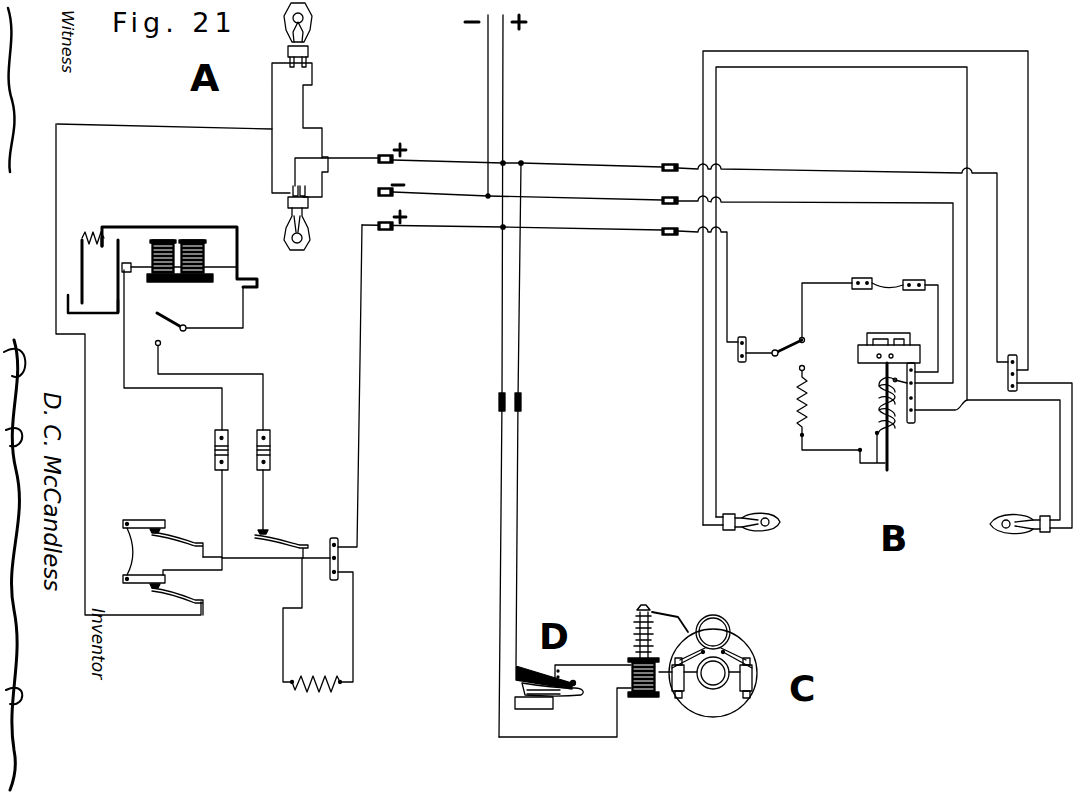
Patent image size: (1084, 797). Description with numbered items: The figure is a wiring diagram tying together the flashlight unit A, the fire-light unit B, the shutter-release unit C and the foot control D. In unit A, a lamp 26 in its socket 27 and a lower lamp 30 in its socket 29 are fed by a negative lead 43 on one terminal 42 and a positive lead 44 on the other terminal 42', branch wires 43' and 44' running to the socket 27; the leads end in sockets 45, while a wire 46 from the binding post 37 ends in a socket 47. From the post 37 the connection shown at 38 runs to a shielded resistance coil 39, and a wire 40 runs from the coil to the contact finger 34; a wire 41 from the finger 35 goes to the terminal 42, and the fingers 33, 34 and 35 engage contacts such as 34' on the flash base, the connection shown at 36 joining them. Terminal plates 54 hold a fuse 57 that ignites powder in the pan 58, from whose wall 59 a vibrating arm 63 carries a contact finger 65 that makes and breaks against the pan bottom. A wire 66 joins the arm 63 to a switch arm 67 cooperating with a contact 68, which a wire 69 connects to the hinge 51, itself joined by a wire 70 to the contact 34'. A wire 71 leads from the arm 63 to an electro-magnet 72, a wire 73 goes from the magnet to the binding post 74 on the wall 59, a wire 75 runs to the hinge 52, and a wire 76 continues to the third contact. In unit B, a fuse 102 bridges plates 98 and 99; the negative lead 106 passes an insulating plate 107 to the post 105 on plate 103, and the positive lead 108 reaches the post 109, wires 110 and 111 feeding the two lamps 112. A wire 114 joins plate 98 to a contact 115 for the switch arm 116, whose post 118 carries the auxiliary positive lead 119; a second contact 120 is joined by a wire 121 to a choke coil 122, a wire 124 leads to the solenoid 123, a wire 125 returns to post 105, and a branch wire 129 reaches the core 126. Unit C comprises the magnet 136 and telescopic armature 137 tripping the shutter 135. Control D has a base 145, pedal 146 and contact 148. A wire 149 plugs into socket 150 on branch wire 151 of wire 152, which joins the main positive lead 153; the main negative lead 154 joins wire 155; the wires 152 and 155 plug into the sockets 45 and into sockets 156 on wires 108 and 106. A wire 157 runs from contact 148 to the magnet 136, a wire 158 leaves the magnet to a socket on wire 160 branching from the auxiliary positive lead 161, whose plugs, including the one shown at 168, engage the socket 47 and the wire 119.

The lamp 26 is at (312, 30).
The lamp socket 27 is at (310, 53).
The socket 29 is at (310, 207).
The lower lamp 30 is at (309, 238).
The contact finger 33 is at (175, 533).
The contact finger 34 is at (281, 533).
The second contact 34' is at (278, 511).
The contact finger 35 is at (175, 602).
The conductor 36 is at (252, 562).
The binding post 37 is at (339, 551).
The conductor 38 is at (364, 620).
The resistance coil 39 is at (335, 690).
The wire 40 is at (283, 618).
The wire 41 is at (182, 612).
The terminal 42 is at (328, 179).
The terminal 42' is at (258, 183).
The negative lead wire 43 is at (338, 235).
The branch wire 43' is at (205, 130).
The positive lead 44 is at (357, 140).
The branch wire 44' is at (250, 107).
The sockets 45 is at (384, 192).
The wire 46 is at (358, 378).
The socket 47 is at (385, 229).
The hinge 51 is at (271, 452).
The hinge 52 is at (214, 445).
The terminal plates 54 is at (150, 519).
The fuse 57 is at (128, 550).
The pan 58 is at (68, 308).
The metallic wall 59 is at (80, 261).
The resilient vibrating arm 63 is at (122, 266).
The contact finger 65 is at (80, 277).
The wire 66 is at (245, 309).
The switch arm 67 is at (172, 320).
The contact 68 is at (163, 345).
The wire 69 is at (262, 375).
The wire 70 is at (267, 510).
The wire 71 is at (237, 264).
The electro-magnet 72 is at (205, 252).
The wire 73 is at (160, 242).
The binding post 74 is at (118, 240).
The wire 75 is at (124, 356).
The wire 76 is at (222, 528).
The metallic plate 98 is at (858, 278).
The metallic plate 99 is at (918, 280).
The fuse 102 is at (897, 281).
The metal plate 103 is at (916, 344).
The binding post 105 is at (920, 412).
The negative lead wire 106 is at (812, 203).
The insulating plate 107 is at (887, 332).
The main positive lead 108 is at (765, 169).
The binding post 109 is at (1008, 385).
The wire 110 is at (968, 410).
The wire 111 is at (1030, 380).
The lamps 112 is at (784, 521).
The wire 114 is at (820, 276).
The contact 115 is at (802, 336).
The switch arm 116 is at (775, 349).
The binding post 118 is at (741, 336).
The auxiliary positive lead 119 is at (735, 290).
The contact 120 is at (797, 371).
The wire 121 is at (796, 395).
The choke coil 122 is at (800, 436).
The solenoid coil 123 is at (878, 412).
The wire 124 is at (840, 451).
The wire 125 is at (890, 385).
The core 126 is at (890, 460).
The branch wire 129 is at (875, 465).
The shutter 135 is at (715, 676).
The electro-magnet 136 is at (647, 698).
The telescopic armature 137 is at (617, 624).
The base 145 is at (530, 702).
The foot pedal 146 is at (565, 684).
The contact 148 is at (522, 683).
The wire 149 is at (518, 575).
The socket 150 is at (522, 396).
The branch wire 151 is at (518, 354).
The wire 152 is at (572, 160).
The main positive lead 153 is at (503, 126).
The main negative lead 154 is at (488, 78).
The wire 155 is at (476, 197).
The sockets 156 is at (666, 163).
The wire 157 is at (578, 662).
The wire 158 is at (498, 617).
The wire 160 is at (500, 339).
The auxiliary positive lead 161 is at (483, 231).
The plug 168 is at (670, 236).